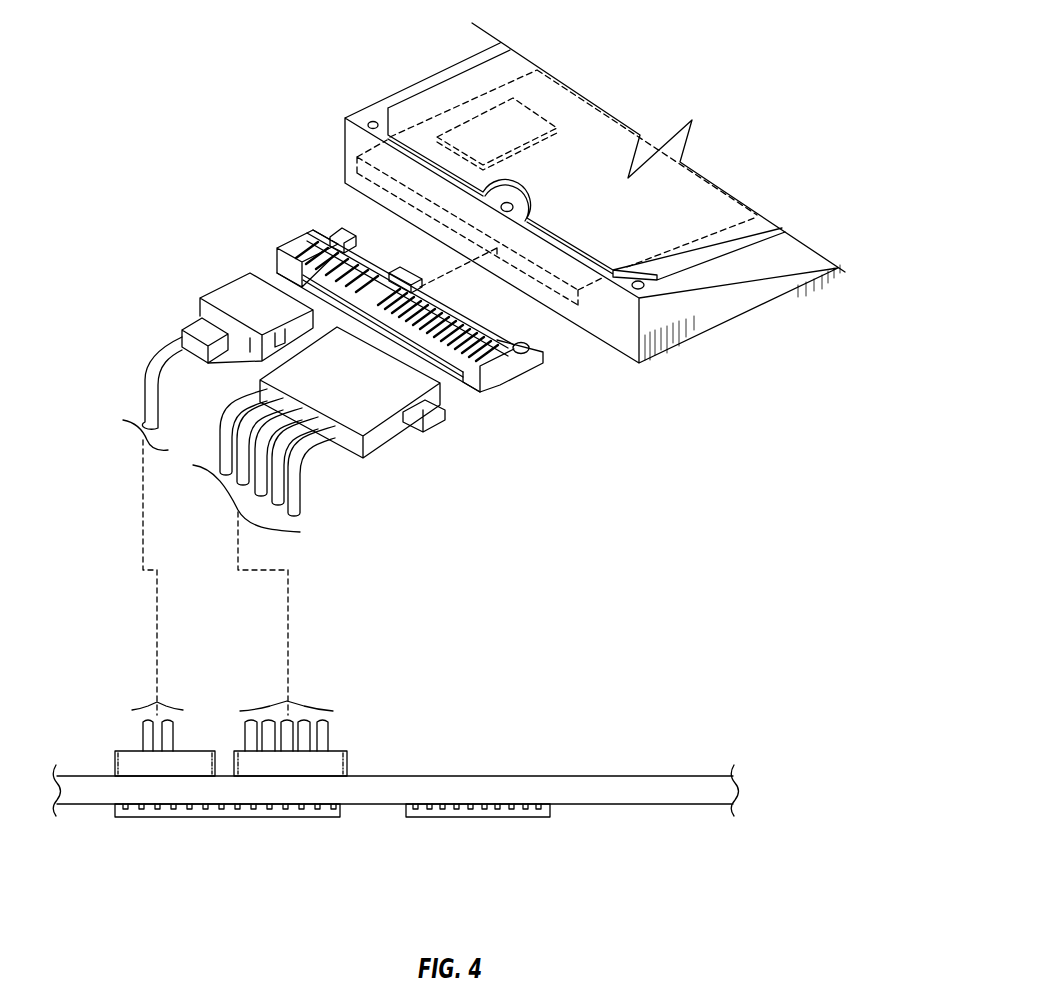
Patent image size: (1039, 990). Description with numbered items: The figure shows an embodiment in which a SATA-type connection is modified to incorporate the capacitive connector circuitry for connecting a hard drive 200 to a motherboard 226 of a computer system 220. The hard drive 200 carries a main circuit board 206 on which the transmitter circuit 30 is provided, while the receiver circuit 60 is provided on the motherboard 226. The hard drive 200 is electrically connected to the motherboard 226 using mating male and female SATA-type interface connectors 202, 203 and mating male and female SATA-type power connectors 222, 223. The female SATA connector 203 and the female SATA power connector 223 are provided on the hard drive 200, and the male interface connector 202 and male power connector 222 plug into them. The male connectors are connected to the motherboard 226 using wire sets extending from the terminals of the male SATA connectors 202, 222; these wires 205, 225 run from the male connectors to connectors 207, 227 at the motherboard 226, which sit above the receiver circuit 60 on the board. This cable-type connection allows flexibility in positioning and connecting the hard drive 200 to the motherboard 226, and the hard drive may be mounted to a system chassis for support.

The hard drive 200 is at (385, 78).
The main circuit board 206 is at (697, 192).
The transmitter circuit 30 is at (522, 152).
The female SATA-type interface connector 203 is at (294, 235).
The female SATA-type power connector 223 is at (512, 372).
The male SATA-type interface connector 202 is at (222, 292).
The data cable 205 is at (144, 344).
The male SATA-type power connector 222 is at (400, 436).
The power cables 225 is at (322, 469).
The motherboard 226 is at (623, 776).
The computer system 220 is at (478, 754).
The connector 207 is at (99, 759).
The connector 227 is at (362, 759).
The receiver circuit 60 is at (227, 817).